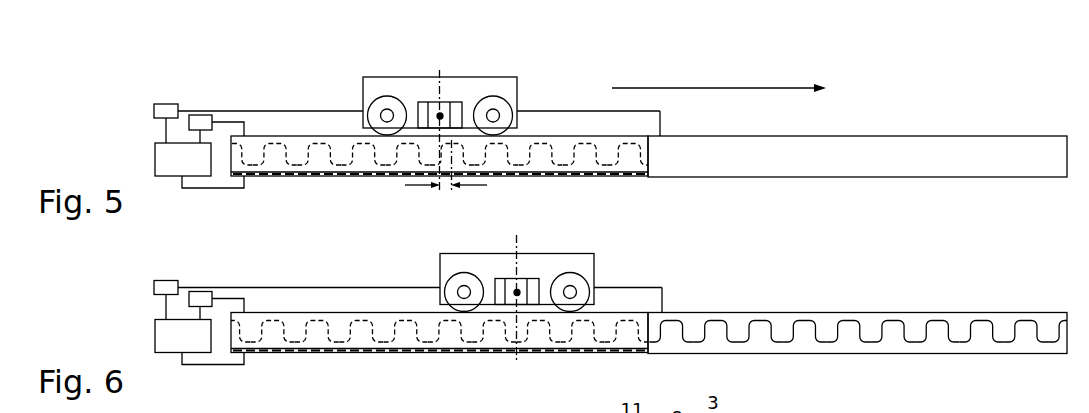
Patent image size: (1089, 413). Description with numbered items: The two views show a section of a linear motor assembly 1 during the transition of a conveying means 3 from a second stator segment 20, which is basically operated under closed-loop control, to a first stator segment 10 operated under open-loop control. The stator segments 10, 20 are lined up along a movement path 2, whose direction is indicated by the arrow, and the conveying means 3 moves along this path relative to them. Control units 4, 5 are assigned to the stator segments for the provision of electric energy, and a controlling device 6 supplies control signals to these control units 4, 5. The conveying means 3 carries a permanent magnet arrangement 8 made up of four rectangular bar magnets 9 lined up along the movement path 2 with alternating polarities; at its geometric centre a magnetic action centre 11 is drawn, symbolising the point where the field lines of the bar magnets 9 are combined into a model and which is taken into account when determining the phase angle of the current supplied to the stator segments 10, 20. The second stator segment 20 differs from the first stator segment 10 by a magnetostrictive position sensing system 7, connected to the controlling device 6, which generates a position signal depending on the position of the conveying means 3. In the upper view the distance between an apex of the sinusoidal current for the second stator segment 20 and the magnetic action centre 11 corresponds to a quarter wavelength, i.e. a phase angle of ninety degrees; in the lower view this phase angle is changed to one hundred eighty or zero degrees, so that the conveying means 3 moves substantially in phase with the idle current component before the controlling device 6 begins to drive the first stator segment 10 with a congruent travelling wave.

In FIG. 5, the linear motor assembly 1 is at (622, 152).
In FIG. 6, the linear motor assembly 1 is at (633, 328).
In FIG. 5, the movement path 2 is at (700, 88).
In FIG. 5, the conveying means 3 is at (440, 105).
In FIG. 6, the conveying means 3 is at (517, 280).
In FIG. 5, the control unit 4 is at (200, 120).
In FIG. 6, the control unit 4 is at (200, 296).
In FIG. 5, the control unit 5 is at (167, 106).
In FIG. 6, the control unit 5 is at (167, 282).
In FIG. 5, the controlling device 6 is at (163, 157).
In FIG. 6, the controlling device 6 is at (163, 334).
In FIG. 5, the position sensing system 7 is at (452, 182).
In FIG. 6, the position sensing system 7 is at (449, 359).
In FIG. 5, the permanent magnet arrangement 8 is at (425, 101).
In FIG. 6, the permanent magnet arrangement 8 is at (502, 278).
In FIG. 5, the bar magnets 9 is at (423, 107).
In FIG. 6, the bar magnets 9 is at (501, 282).
In FIG. 5, the first stator segment 10 is at (793, 163).
In FIG. 6, the first stator segment 10 is at (793, 340).
In FIG. 5, the magnetic action centre 11 is at (440, 116).
In FIG. 6, the magnetic action centre 11 is at (517, 292).
In FIG. 5, the second stator segment 20 is at (360, 177).
In FIG. 6, the second stator segment 20 is at (360, 354).